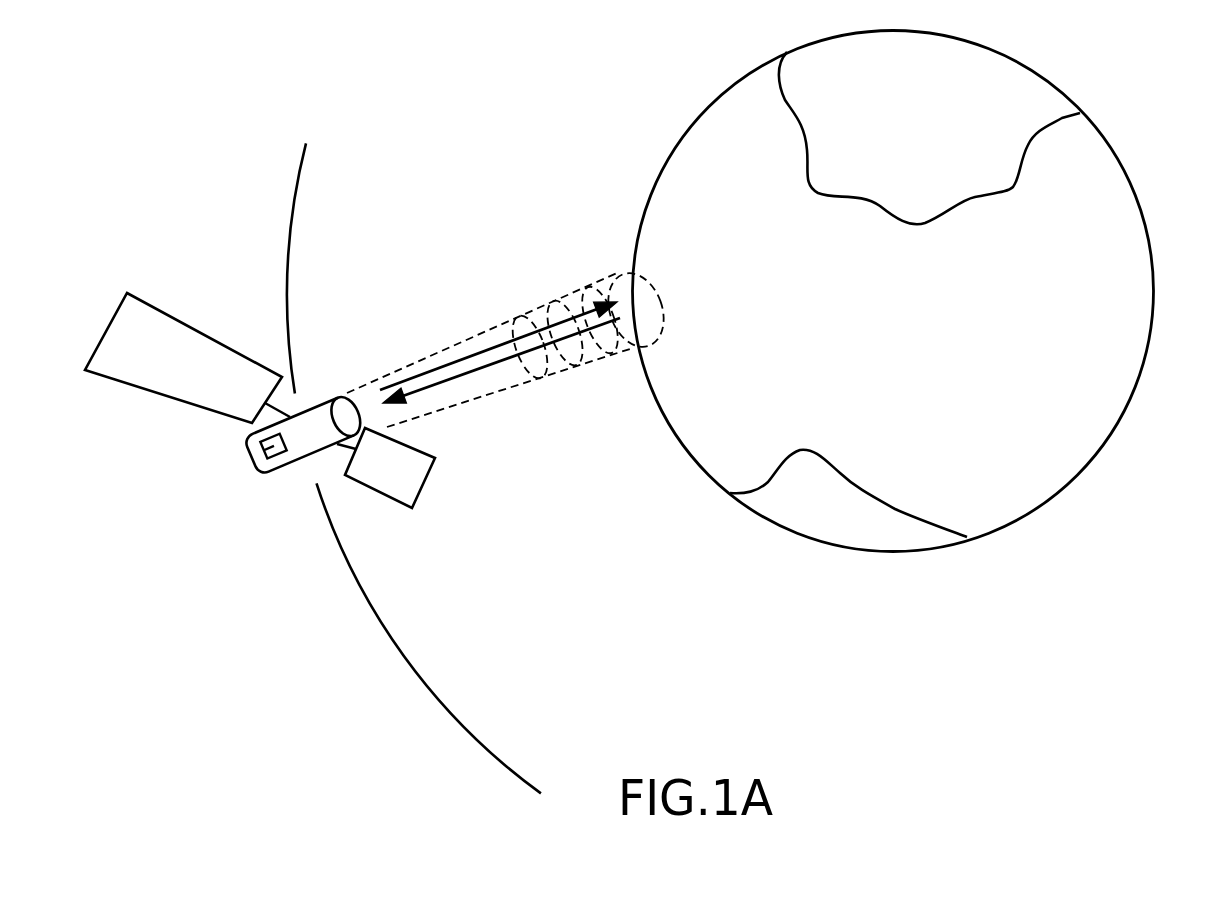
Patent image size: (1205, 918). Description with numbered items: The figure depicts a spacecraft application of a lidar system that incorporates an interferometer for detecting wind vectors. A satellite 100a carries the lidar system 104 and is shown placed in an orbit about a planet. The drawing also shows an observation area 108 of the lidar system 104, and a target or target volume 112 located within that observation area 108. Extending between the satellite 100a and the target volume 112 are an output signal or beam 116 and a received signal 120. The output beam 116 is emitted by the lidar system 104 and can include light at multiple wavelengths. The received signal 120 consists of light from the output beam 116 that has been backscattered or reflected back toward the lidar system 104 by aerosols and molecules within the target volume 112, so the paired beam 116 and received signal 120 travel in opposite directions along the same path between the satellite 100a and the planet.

The satellite 100a is at (283, 468).
The lidar system 104 is at (264, 447).
The observation area 108 is at (623, 195).
The target volume 112 is at (612, 355).
The output beam 116 is at (477, 337).
The received signal 120 is at (477, 337).